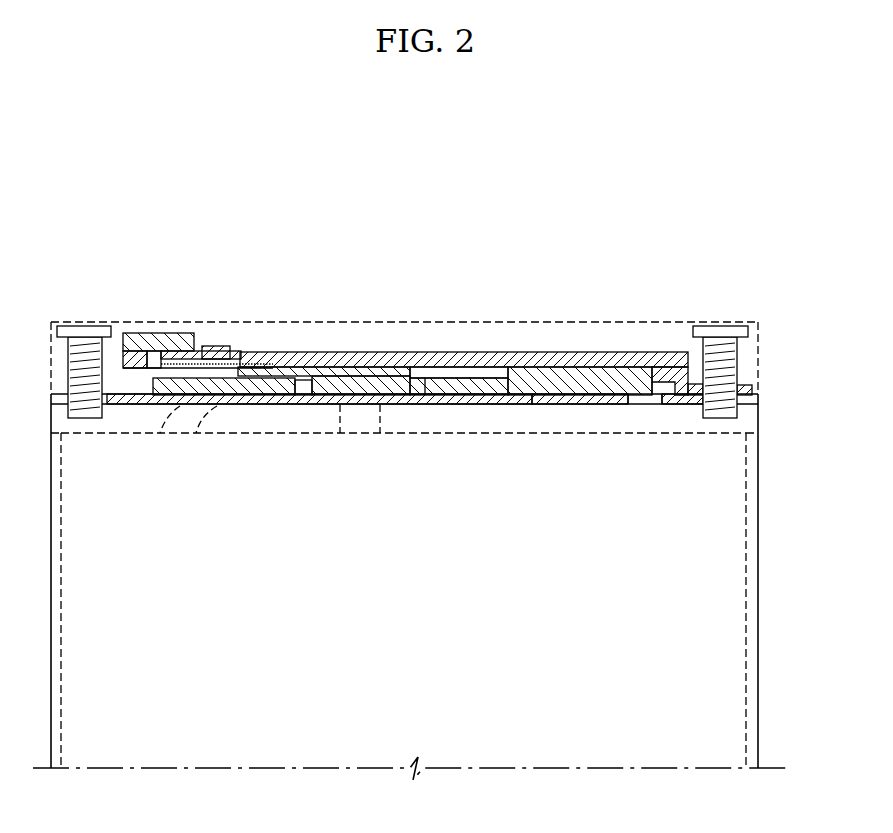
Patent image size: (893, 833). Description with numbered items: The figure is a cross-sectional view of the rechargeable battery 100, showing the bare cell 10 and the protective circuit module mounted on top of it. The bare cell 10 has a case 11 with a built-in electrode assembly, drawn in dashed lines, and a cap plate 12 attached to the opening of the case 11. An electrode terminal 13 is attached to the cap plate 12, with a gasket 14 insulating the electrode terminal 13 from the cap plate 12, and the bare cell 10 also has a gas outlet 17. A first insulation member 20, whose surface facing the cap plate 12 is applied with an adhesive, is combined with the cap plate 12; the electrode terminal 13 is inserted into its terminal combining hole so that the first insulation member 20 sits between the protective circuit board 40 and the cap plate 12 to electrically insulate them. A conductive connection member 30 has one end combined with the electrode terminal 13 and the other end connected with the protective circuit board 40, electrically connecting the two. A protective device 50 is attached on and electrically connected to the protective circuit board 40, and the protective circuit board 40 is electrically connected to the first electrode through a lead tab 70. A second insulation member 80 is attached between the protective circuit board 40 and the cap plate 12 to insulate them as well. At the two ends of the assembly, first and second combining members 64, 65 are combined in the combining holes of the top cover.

The rechargeable battery 100 is at (403, 196).
The bare cell 10 is at (763, 623).
The case 11 is at (759, 537).
The cap plate 12 is at (458, 403).
The electrode terminal 13 is at (368, 382).
The gasket 14 is at (305, 393).
The gas outlet 17 is at (583, 405).
The first insulation member 20 is at (283, 383).
The conductive connection member 30 is at (393, 372).
The protective circuit board 40 is at (488, 383).
The protective device 50 is at (170, 340).
The first combining member 64 is at (720, 328).
The second combining member 65 is at (86, 328).
The lead tab 70 is at (682, 350).
The second insulation member 80 is at (538, 370).